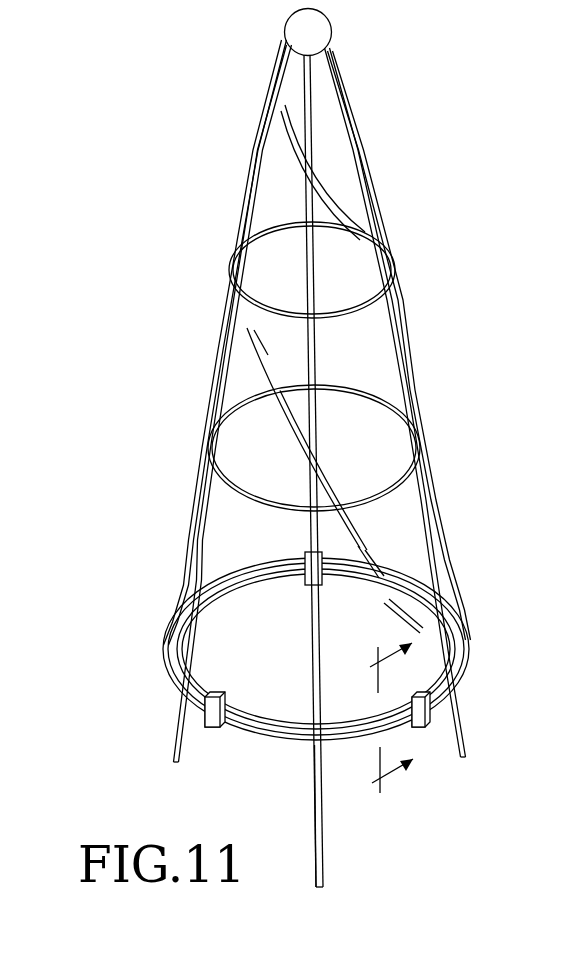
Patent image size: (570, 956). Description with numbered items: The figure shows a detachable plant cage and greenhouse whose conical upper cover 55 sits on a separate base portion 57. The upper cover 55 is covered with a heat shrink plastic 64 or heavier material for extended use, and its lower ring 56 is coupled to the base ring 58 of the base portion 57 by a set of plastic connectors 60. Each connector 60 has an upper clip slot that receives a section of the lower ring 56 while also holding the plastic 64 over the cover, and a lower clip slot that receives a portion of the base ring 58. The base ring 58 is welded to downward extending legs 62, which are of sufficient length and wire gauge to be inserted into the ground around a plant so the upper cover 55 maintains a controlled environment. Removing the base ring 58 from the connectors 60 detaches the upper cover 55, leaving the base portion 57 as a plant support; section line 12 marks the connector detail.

The upper cover 55 is at (395, 158).
The heat shrink plastic 64 is at (382, 370).
The lower ring 56 is at (472, 640).
The base ring 58 is at (270, 742).
The plastic connectors 60 is at (211, 728).
The legs 62 is at (175, 736).
The base portion 57 is at (405, 814).
The section line 12 is at (375, 725).